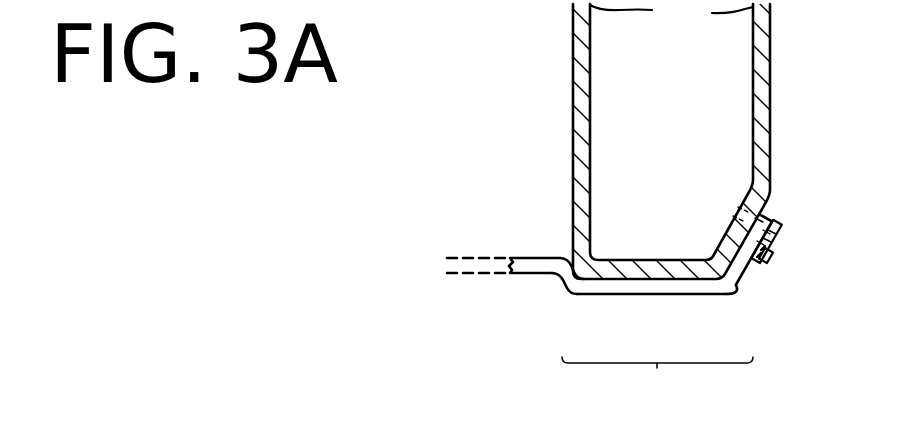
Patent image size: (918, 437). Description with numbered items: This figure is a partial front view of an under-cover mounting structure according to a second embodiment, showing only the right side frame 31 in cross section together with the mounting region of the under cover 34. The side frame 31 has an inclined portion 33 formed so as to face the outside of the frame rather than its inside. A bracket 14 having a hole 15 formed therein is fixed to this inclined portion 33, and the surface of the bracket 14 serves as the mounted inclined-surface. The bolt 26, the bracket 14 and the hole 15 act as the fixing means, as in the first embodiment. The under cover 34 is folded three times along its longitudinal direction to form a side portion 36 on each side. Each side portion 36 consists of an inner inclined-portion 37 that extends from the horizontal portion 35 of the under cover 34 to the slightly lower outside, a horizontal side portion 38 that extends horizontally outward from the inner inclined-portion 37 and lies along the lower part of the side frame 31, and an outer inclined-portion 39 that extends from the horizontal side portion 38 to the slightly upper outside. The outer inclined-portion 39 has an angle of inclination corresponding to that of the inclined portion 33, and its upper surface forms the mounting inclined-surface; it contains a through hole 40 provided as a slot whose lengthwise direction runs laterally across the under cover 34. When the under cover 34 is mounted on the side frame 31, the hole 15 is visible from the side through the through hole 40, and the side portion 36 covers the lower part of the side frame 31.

The side frame 31 is at (561, 104).
The hole 15 is at (735, 215).
The inclined portion 33 is at (761, 222).
The bracket 14 is at (772, 229).
The through hole 40 is at (776, 222).
The bolt 26 is at (775, 248).
The horizontal portion 35 is at (519, 257).
The under cover 34 is at (607, 273).
The inner inclined-portion 37 is at (565, 283).
The horizontal side portion 38 is at (655, 296).
The outer inclined-portion 39 is at (747, 283).
The side portion 36 is at (657, 376).